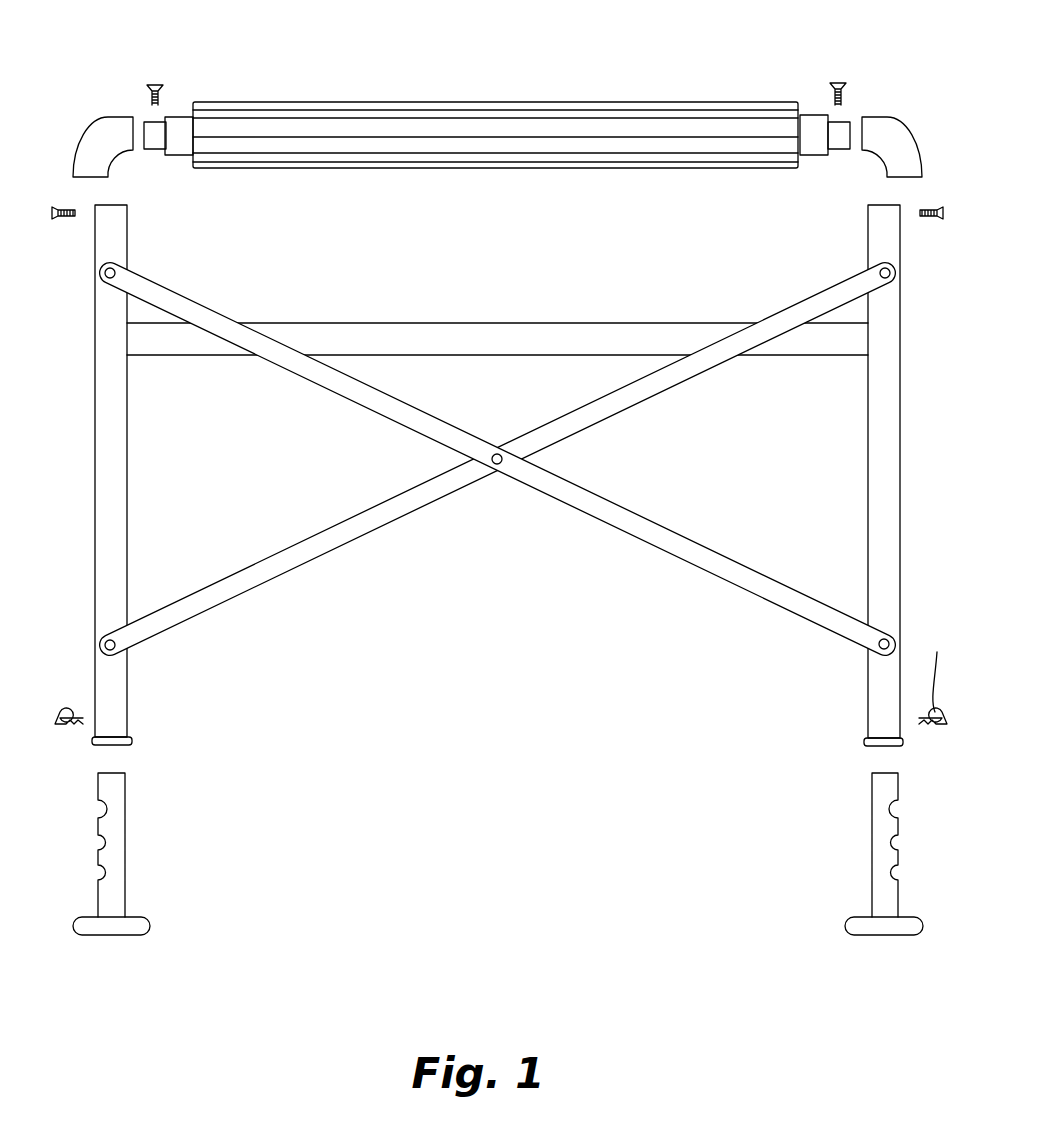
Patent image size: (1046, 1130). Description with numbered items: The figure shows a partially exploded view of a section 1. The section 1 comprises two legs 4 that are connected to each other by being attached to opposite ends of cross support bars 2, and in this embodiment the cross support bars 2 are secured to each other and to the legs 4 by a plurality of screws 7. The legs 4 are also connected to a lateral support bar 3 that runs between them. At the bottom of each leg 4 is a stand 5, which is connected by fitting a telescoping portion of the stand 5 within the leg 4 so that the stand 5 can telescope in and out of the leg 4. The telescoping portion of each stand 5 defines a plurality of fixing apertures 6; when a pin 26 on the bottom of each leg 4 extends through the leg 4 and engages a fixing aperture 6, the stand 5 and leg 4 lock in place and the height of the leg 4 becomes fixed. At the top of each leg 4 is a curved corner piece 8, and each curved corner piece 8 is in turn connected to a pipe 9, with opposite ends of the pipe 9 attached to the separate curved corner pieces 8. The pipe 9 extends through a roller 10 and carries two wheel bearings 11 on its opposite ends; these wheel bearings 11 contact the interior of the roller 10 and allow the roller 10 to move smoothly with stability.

The section 1 is at (675, 897).
The cross support bars 2 is at (408, 500).
The lateral support bar 3 is at (528, 322).
The legs 4 is at (120, 440).
The stand 5 is at (125, 818).
The fixing apertures 6 is at (104, 882).
The screws 7 is at (65, 220).
The curved corner piece 8 is at (110, 128).
The pipe 9 is at (840, 137).
The roller 10 is at (605, 103).
The wheel bearings 11 is at (183, 155).
The pin 26 is at (80, 720).